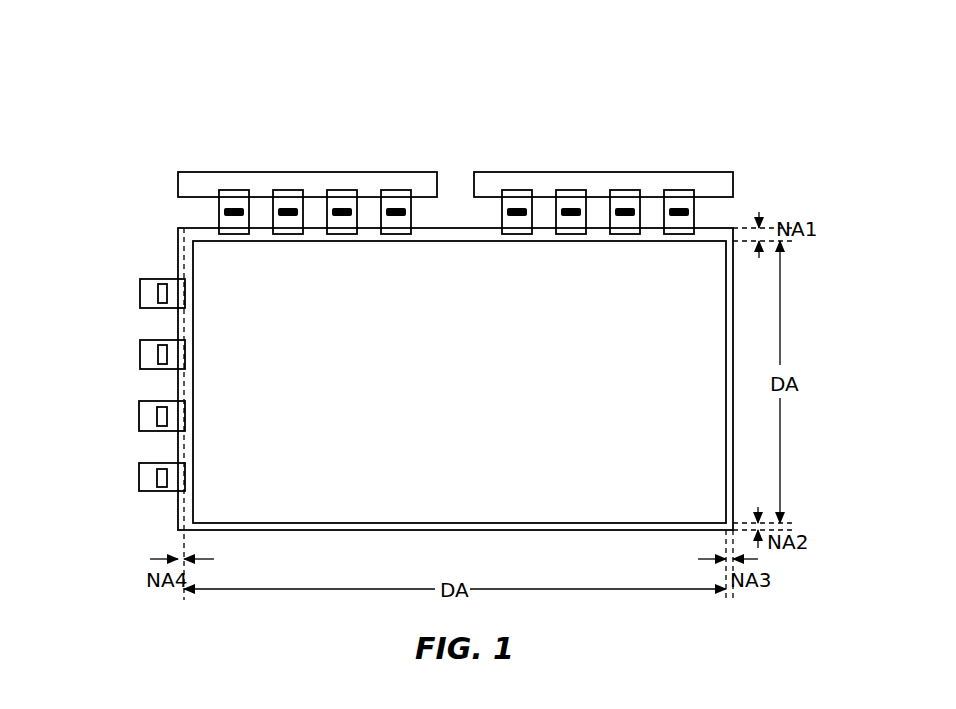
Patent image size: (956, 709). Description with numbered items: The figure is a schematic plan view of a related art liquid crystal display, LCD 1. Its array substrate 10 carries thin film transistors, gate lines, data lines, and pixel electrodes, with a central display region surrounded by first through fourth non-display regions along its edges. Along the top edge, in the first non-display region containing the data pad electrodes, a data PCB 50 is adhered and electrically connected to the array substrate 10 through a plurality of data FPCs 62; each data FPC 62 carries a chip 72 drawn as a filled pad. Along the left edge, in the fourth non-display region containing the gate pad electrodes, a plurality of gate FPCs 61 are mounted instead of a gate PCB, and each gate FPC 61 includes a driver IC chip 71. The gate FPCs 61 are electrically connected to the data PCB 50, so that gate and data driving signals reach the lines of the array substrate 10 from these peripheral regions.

The LCD 1 is at (714, 96).
The array substrate 10 is at (176, 241).
The data PCB 50 is at (352, 182).
The gate FPCs 61 is at (148, 293).
The data FPCs 62 is at (234, 207).
The driver IC chips 71 is at (148, 352).
The data driving pad 72 is at (288, 207).